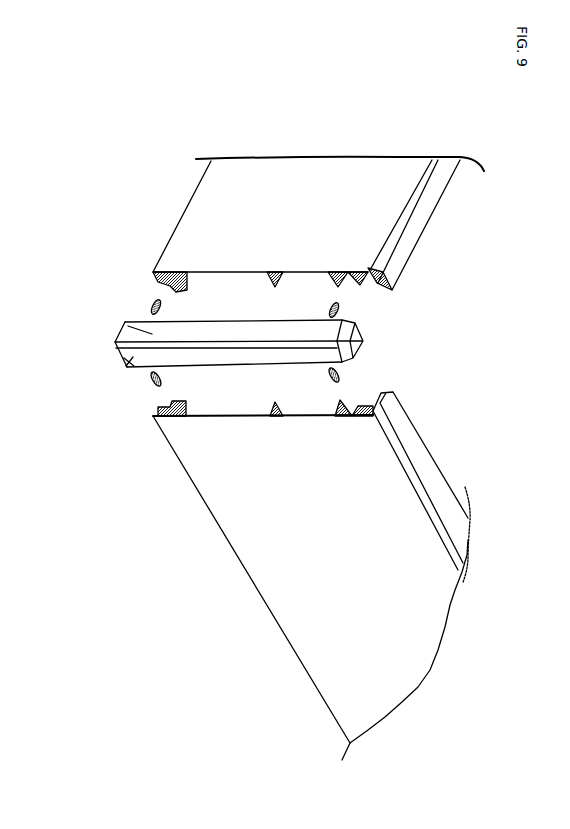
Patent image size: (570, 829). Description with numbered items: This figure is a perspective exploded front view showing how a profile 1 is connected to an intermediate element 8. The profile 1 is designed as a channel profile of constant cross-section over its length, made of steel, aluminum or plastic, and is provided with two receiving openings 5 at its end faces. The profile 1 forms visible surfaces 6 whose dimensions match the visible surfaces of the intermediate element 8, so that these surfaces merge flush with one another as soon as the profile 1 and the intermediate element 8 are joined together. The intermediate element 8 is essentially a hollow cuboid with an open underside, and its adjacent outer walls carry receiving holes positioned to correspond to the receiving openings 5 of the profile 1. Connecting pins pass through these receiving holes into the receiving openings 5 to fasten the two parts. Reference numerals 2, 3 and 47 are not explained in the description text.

The profile 1 is at (268, 182).
The second plate 2 is at (300, 598).
The plate edge 3 is at (232, 218).
The receiving opening 5 is at (125, 323).
The visible surface 6 is at (418, 215).
The intermediate element 8 is at (363, 352).
The pin 47 is at (143, 295).